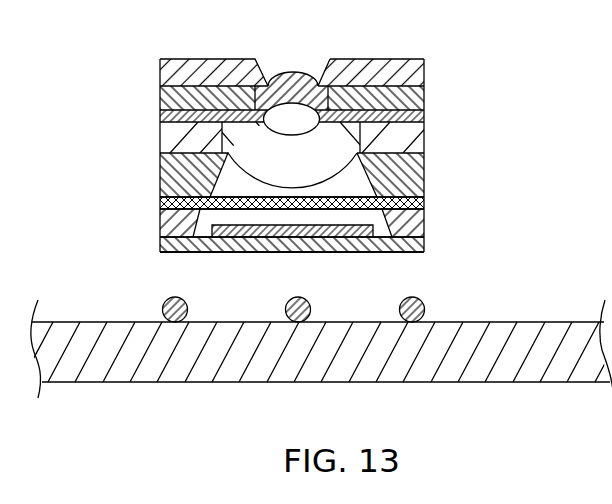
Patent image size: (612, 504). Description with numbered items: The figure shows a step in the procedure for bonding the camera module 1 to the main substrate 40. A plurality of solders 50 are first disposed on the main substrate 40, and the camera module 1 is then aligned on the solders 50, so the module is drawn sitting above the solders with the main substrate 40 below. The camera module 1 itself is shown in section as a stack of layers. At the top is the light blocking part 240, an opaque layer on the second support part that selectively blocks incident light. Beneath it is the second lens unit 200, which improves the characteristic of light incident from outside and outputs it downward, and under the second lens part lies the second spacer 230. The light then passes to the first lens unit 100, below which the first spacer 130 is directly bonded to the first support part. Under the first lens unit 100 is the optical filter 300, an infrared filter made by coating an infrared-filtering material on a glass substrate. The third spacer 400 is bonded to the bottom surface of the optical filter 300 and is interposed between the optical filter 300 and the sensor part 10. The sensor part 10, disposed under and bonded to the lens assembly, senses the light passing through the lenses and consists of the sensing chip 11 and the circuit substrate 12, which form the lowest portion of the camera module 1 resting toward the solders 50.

The camera module 1 is at (418, 38).
The sensor part 10 is at (102, 205).
The sensing chip 11 is at (183, 233).
The circuit substrate 12 is at (160, 250).
The main substrate 40 is at (514, 330).
The solders 50 is at (417, 299).
The first lens unit 100 is at (424, 142).
The first spacer 130 is at (424, 180).
The second lens unit 200 is at (424, 100).
The second spacer 230 is at (424, 117).
The light blocking part 240 is at (424, 80).
The optical filter 300 is at (424, 203).
The third spacer 400 is at (424, 228).